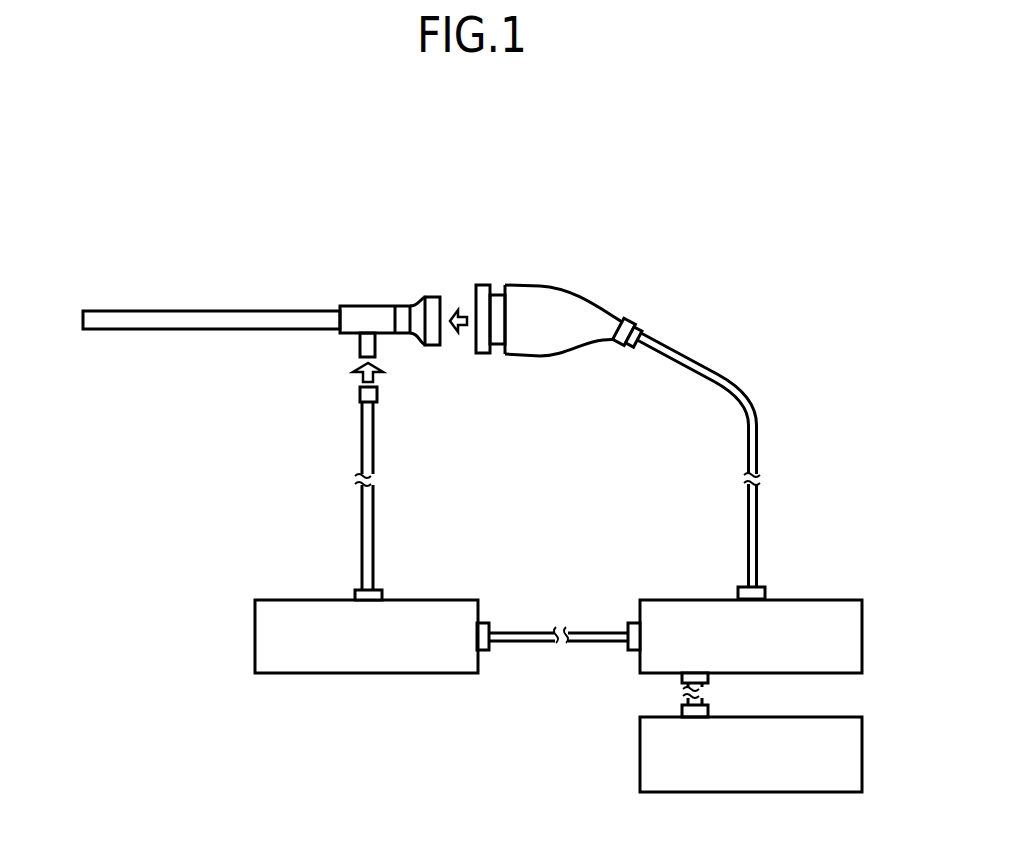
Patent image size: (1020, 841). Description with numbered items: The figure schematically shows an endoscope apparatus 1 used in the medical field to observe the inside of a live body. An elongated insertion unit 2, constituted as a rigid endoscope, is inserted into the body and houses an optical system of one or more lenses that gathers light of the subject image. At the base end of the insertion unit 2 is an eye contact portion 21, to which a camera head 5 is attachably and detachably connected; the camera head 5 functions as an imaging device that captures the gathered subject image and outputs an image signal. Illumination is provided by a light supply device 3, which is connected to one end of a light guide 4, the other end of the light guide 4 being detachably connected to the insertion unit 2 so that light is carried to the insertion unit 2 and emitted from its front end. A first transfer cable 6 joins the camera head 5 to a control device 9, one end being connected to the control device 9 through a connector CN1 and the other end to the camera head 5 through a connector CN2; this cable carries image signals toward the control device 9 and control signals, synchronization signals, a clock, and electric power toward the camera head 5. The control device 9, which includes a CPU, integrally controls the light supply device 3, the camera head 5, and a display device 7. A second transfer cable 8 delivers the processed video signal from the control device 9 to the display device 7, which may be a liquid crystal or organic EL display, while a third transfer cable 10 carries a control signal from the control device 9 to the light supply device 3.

The endoscope apparatus 1 is at (720, 221).
The insertion unit 2 is at (290, 320).
The eye contact portion 21 is at (437, 305).
The light supply device 3 is at (418, 579).
The light guide 4 is at (362, 538).
The camera head 5 is at (528, 300).
The first transfer cable 6 is at (752, 438).
The display device 7 is at (808, 697).
The second transfer cable 8 is at (682, 702).
The control device 9 is at (808, 579).
The third transfer cable 10 is at (598, 631).
The connector CN1 is at (763, 587).
The connector CN2 is at (633, 345).